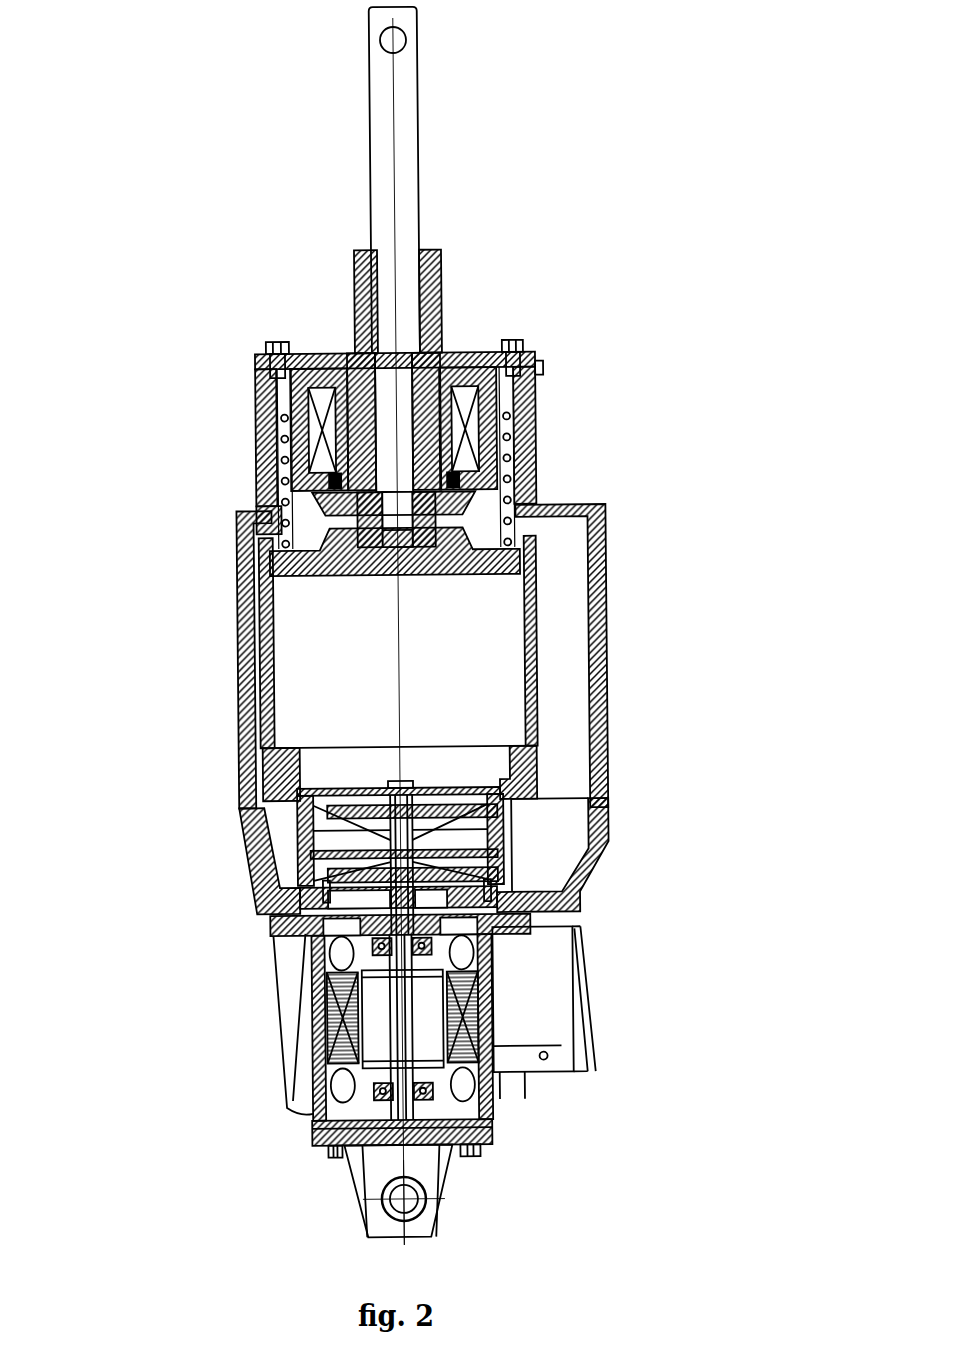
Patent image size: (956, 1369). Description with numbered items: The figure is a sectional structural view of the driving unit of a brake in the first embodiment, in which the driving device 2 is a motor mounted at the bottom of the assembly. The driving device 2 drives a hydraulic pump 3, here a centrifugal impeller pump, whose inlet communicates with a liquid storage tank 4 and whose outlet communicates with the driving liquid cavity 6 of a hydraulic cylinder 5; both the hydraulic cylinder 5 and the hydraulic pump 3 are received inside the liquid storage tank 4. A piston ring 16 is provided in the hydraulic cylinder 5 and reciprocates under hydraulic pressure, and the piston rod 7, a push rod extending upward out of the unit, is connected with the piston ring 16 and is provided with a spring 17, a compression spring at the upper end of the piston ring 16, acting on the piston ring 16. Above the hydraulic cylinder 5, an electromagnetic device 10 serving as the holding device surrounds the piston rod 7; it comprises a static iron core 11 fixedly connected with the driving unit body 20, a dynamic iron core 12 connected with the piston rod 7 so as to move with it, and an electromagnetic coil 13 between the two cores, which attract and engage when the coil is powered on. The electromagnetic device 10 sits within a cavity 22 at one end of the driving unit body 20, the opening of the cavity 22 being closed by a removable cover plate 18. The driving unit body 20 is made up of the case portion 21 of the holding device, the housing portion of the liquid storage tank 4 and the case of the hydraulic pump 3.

The driving device 2 is at (312, 972).
The hydraulic pump 3 is at (290, 820).
The liquid storage tank 4 is at (597, 590).
The hydraulic cylinder 5 is at (533, 650).
The driving liquid cavity 6 is at (463, 673).
The piston rod 7 is at (402, 302).
The electromagnetic device 10 is at (745, 270).
The static iron core 11 is at (537, 441).
The dynamic iron core 12 is at (540, 512).
The electromagnetic coil 13 is at (537, 378).
The piston ring 16 is at (290, 574).
The spring 17 is at (287, 438).
The cover plate 18 is at (322, 357).
The driving unit body 20 is at (227, 585).
The case portion 21 is at (263, 403).
The cavity 22 is at (340, 358).